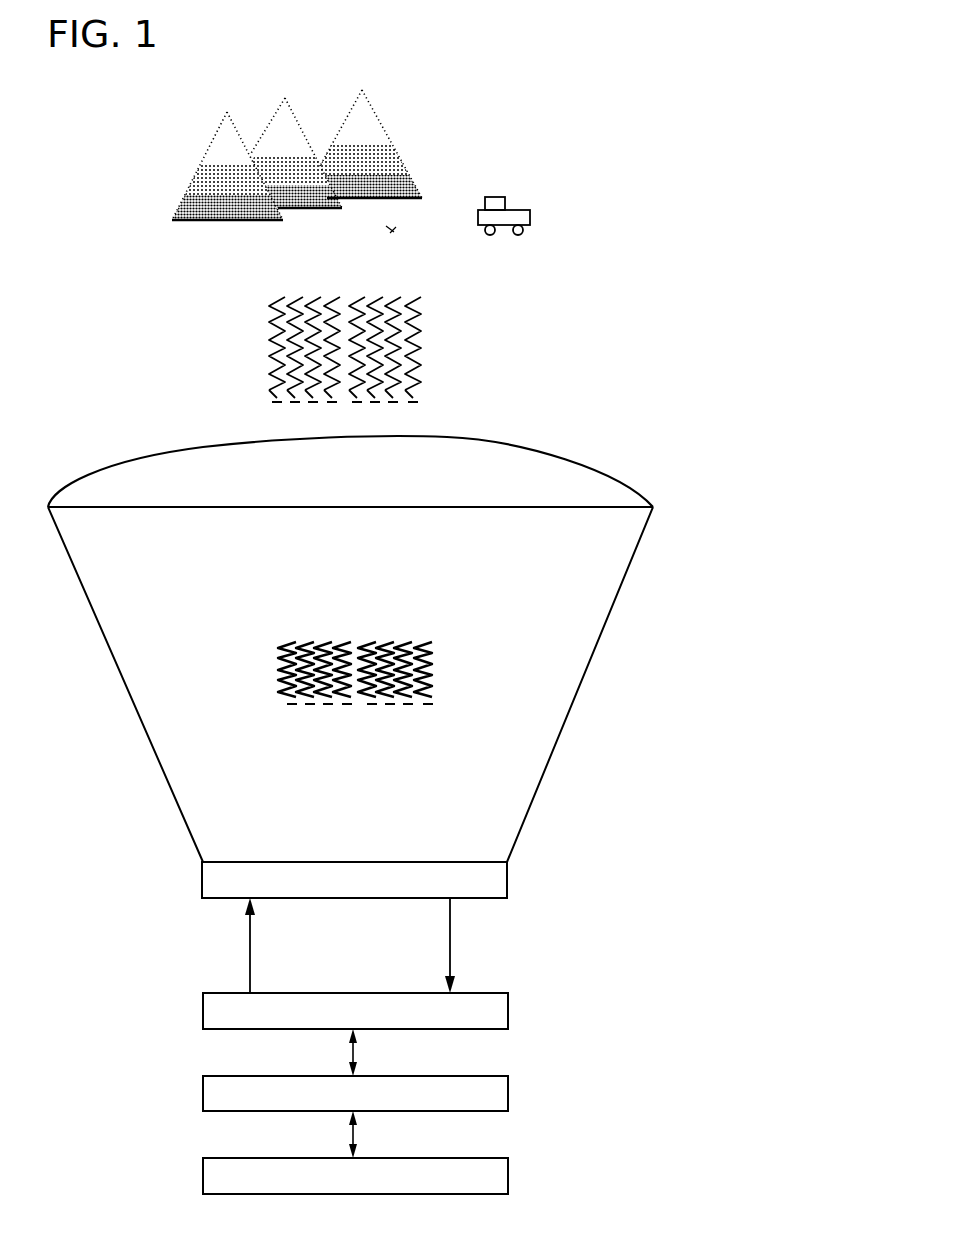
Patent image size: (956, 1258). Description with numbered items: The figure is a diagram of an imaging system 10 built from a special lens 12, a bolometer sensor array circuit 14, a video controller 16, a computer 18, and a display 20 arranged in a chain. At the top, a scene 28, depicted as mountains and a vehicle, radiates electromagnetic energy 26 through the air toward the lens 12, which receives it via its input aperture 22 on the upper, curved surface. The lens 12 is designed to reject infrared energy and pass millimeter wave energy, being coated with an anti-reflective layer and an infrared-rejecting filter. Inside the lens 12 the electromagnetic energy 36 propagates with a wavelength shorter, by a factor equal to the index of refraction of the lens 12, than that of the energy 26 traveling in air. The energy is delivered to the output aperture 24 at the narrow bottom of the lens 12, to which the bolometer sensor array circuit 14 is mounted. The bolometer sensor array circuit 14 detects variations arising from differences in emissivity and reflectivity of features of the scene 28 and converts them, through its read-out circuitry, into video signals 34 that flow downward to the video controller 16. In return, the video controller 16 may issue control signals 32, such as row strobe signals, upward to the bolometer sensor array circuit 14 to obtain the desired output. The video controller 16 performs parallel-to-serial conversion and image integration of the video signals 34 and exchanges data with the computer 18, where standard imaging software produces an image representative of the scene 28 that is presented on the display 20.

The imaging system 10 is at (782, 208).
The lens 12 is at (697, 497).
The bolometer sensor array circuit 14 is at (507, 880).
The video controller 16 is at (508, 1013).
The computer 18 is at (508, 1100).
The display 20 is at (508, 1180).
The input aperture 22 is at (497, 459).
The output aperture 24 is at (470, 862).
The electromagnetic energy 26 is at (447, 371).
The scene 28 is at (472, 152).
The control signals 32 is at (250, 963).
The video signals 34 is at (450, 913).
The electromagnetic energy propagating in the lens 36 is at (453, 668).